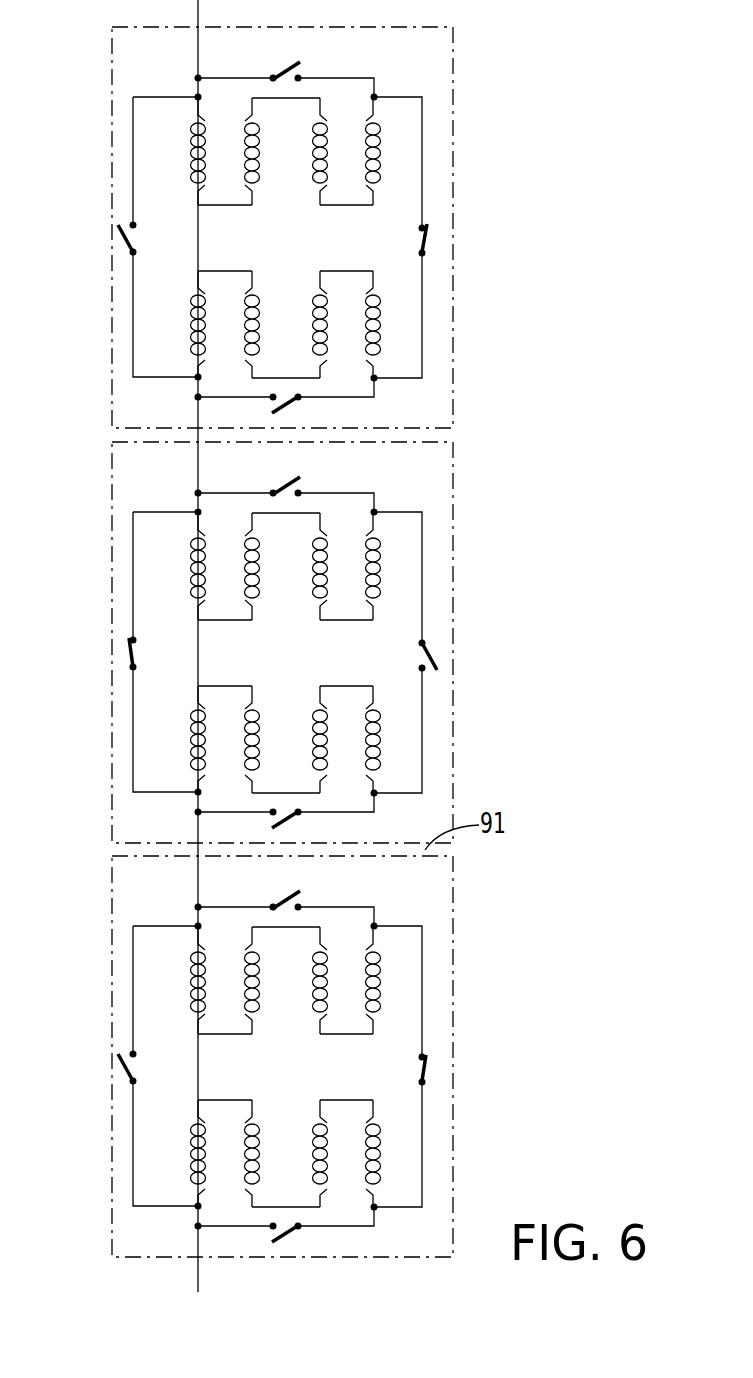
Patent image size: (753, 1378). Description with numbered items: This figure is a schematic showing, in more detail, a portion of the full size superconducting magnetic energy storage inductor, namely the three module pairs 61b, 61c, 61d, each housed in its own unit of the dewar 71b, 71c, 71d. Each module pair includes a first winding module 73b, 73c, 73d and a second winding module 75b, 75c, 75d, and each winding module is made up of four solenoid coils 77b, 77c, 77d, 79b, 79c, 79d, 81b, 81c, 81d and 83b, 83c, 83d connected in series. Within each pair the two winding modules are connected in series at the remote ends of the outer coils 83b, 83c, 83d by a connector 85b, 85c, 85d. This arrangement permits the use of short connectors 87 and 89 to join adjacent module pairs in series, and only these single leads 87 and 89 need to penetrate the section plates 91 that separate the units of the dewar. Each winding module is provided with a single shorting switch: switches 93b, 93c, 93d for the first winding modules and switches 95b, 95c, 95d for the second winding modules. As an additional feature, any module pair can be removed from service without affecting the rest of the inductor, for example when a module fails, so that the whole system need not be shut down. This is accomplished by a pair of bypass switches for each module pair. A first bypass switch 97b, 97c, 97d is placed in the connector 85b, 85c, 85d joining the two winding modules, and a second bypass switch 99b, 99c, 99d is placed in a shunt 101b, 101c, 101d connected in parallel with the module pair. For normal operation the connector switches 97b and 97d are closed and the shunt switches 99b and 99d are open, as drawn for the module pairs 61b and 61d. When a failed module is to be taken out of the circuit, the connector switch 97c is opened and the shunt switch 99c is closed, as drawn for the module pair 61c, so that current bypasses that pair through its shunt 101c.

The module pair 61b is at (405, 213).
The module pair 61c is at (441, 577).
The module pair 61d is at (439, 991).
The dewar unit 71b is at (437, 288).
The dewar unit 71c is at (318, 642).
The dewar unit 71d is at (318, 1056).
The winding module 73b is at (150, 175).
The winding module 73c is at (200, 566).
The winding module 73d is at (200, 980).
The winding module 75b is at (153, 329).
The winding module 75c is at (209, 739).
The winding module 75d is at (209, 1153).
The solenoid coil 77b is at (192, 143).
The solenoid coil 77c is at (172, 566).
The solenoid coil 77d is at (172, 980).
The solenoid coil 79b is at (245, 141).
The solenoid coil 79c is at (234, 560).
The solenoid coil 79d is at (234, 974).
The solenoid coil 81b is at (313, 148).
The solenoid coil 81c is at (303, 565).
The solenoid coil 81d is at (303, 979).
The outer coil 83b is at (380, 128).
The outer coil 83c is at (399, 549).
The outer coil 83d is at (399, 963).
The connector 85b is at (422, 327).
The connector 85c is at (444, 730).
The connector 85d is at (444, 1144).
The connector 87 is at (198, 410).
The connector 89 is at (136, 865).
The section plate 91 is at (425, 435).
The shorting switch 93b is at (288, 64).
The shorting switch 93c is at (286, 479).
The shorting switch 93d is at (286, 893).
The shorting switch 95b is at (287, 409).
The shorting switch 95c is at (286, 817).
The shorting switch 95d is at (286, 1231).
The bypass switch 97b is at (425, 243).
The bypass switch 97c is at (471, 658).
The bypass switch 97d is at (467, 1073).
The bypass switch 99b is at (120, 235).
The bypass switch 99c is at (97, 656).
The bypass switch 99d is at (92, 1070).
The shunt 101b is at (133, 148).
The shunt 101c is at (121, 576).
The shunt 101d is at (121, 990).